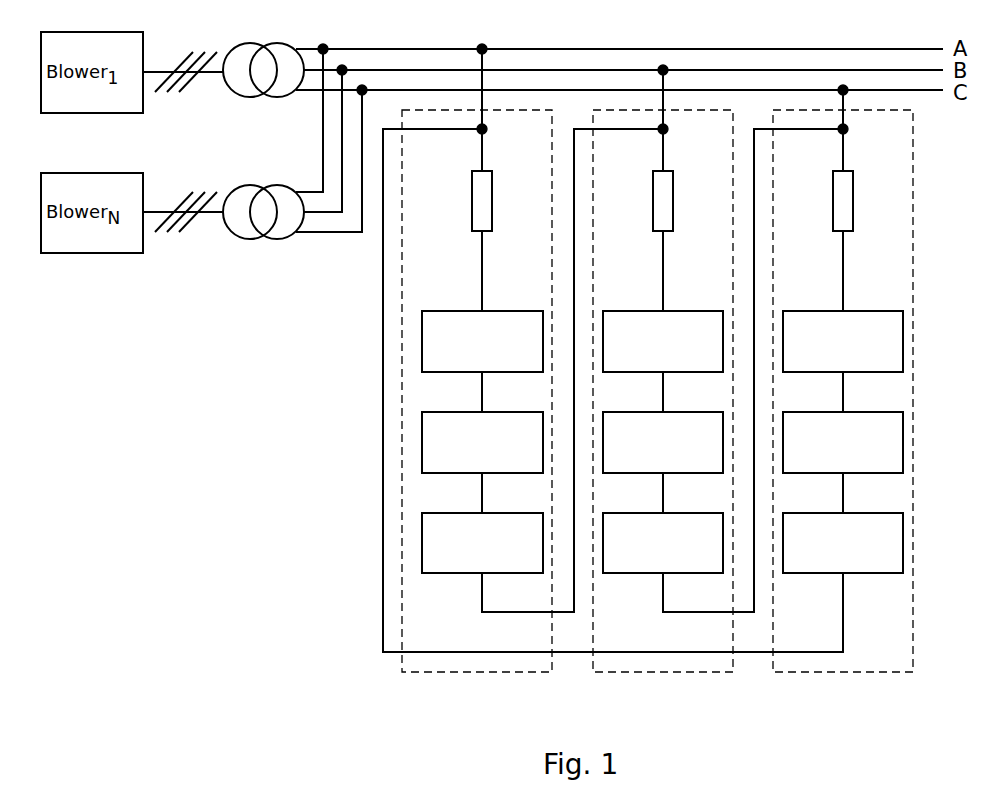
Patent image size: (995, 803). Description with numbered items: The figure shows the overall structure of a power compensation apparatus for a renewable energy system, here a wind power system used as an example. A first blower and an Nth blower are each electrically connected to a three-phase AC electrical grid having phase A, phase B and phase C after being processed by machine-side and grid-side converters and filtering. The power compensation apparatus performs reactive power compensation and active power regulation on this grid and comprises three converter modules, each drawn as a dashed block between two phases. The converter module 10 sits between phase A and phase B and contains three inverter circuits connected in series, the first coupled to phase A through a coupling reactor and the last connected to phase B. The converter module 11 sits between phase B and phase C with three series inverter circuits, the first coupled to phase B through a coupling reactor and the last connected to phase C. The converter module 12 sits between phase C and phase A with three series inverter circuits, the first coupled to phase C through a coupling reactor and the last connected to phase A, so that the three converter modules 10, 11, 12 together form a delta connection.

The converter module 10 is at (471, 672).
The converter module 11 is at (665, 672).
The converter module 12 is at (845, 672).